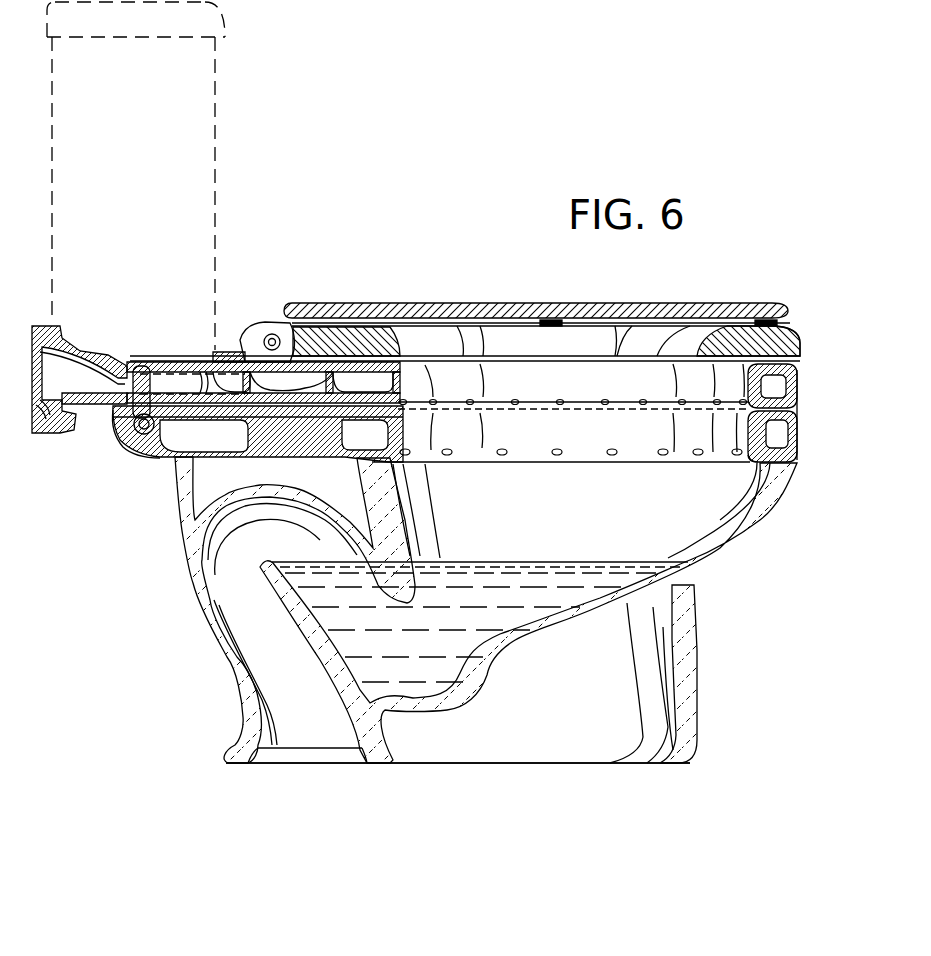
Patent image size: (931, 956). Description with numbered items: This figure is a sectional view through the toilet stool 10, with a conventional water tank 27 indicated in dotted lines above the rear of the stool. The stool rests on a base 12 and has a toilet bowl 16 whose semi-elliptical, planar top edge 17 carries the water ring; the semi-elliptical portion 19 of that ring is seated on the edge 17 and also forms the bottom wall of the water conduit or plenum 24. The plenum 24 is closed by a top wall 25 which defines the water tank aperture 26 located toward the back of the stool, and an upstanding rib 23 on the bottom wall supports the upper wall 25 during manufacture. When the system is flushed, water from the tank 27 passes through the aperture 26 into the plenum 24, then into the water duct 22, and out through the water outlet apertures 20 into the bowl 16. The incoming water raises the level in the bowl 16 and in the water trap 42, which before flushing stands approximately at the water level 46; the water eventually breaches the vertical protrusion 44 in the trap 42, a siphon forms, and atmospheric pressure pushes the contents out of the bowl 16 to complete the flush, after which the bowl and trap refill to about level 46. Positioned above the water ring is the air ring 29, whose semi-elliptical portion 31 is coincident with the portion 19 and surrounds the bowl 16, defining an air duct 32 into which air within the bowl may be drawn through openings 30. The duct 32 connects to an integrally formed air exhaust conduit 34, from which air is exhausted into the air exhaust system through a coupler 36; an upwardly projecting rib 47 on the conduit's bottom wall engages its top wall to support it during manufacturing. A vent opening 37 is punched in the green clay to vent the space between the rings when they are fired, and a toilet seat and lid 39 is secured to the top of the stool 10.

The toilet stool 10 is at (752, 594).
The base 12 is at (697, 686).
The toilet bowl 16 is at (743, 540).
The top edge 17 is at (802, 470).
The semi-elliptical portion 19 is at (577, 462).
The water outlet apertures 20 is at (663, 456).
The water duct 22 is at (780, 432).
The upstanding rib 23 is at (292, 435).
The water conduit or plenum 24 is at (160, 434).
The top wall 25 is at (147, 417).
The water tank aperture 26 is at (150, 422).
The water tank 27 is at (217, 161).
The air ring 29 is at (797, 385).
The openings 30 is at (560, 405).
The semi-elliptical portion 31 is at (628, 372).
The air duct 32 is at (773, 381).
The air exhaust conduit 34 is at (362, 382).
The coupler 36 is at (34, 434).
The vent opening 37 is at (232, 398).
The toilet seat and lid 39 is at (717, 340).
The water trap 42 is at (247, 533).
The vertical protrusion 44 is at (285, 560).
The water level 46 is at (257, 547).
The upwardly projecting rib 47 is at (292, 385).